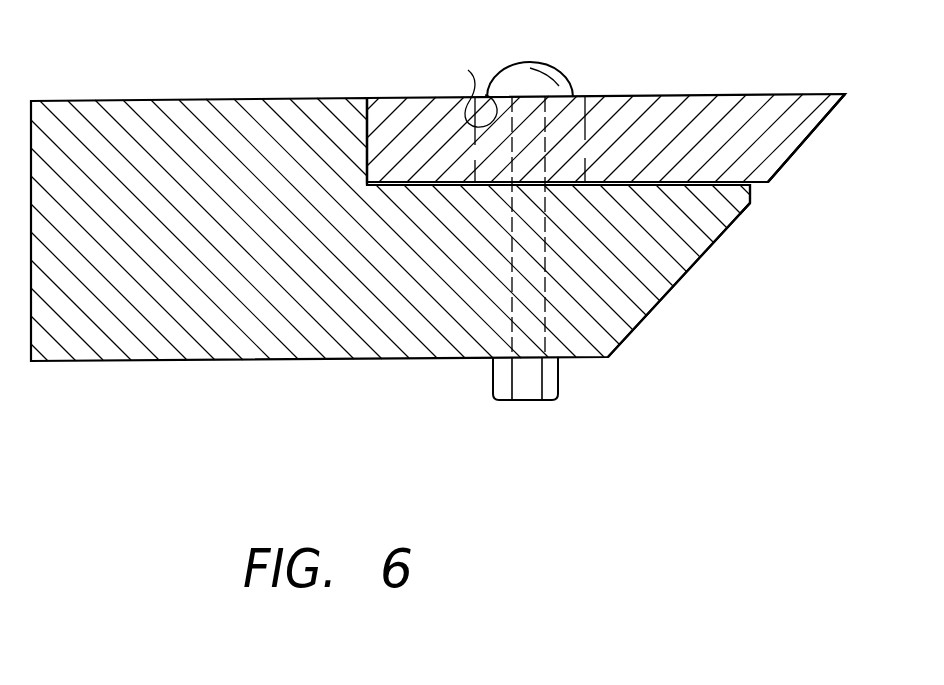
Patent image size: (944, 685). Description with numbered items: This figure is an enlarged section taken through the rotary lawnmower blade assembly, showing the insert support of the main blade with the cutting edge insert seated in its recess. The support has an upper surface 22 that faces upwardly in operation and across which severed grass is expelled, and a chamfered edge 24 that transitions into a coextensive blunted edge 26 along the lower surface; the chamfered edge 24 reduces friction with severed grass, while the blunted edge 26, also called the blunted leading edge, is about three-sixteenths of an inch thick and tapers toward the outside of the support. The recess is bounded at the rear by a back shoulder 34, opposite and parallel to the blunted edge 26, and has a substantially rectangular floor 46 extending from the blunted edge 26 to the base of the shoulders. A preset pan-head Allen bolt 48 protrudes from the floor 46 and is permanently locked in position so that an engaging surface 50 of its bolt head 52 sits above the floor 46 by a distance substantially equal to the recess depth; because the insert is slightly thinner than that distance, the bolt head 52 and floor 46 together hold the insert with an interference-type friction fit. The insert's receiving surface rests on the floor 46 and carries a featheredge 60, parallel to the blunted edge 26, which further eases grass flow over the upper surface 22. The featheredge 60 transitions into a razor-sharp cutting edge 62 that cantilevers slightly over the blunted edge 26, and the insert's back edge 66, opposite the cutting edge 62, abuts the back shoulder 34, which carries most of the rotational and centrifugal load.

The upper surface 22 is at (578, 357).
The chamfered edge 24 is at (693, 277).
The blunted edge 26 is at (750, 192).
The back shoulder 34 is at (372, 124).
The floor 46 is at (640, 190).
The bolt 48 is at (545, 148).
The engaging surface 50 is at (473, 82).
The bolt head 52 is at (567, 30).
The featheredge 60 is at (800, 148).
The cutting edge 62 is at (845, 94).
The back edge 66 is at (372, 182).